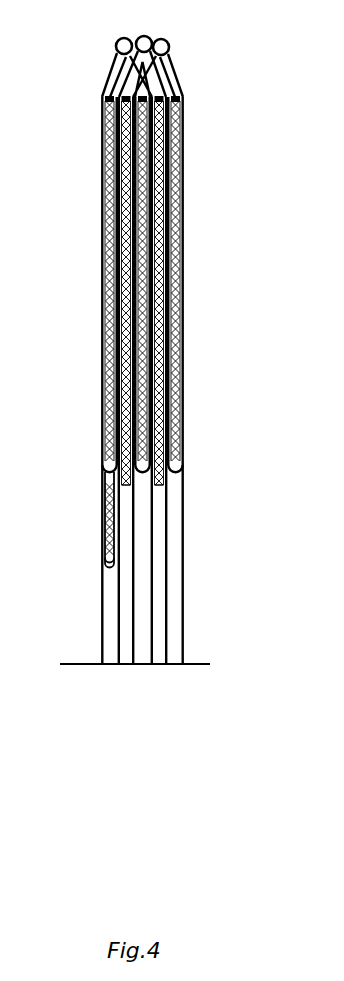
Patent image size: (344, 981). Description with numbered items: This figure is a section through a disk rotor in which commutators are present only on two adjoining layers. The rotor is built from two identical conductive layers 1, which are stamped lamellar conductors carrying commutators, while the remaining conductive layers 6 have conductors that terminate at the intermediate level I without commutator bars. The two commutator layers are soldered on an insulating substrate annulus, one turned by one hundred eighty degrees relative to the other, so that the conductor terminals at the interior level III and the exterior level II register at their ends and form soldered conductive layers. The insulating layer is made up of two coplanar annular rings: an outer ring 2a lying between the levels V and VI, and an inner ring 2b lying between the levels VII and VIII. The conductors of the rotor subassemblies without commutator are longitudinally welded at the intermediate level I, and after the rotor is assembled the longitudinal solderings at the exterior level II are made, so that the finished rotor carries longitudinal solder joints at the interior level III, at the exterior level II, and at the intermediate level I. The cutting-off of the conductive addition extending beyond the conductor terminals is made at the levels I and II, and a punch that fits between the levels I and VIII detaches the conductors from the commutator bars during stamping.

The conductive layer 1 is at (118, 196).
The outer ring 2a is at (107, 325).
The inner ring 2b is at (115, 517).
The conductive layer 6 is at (147, 225).
The intermediate level I is at (102, 473).
The exterior level II is at (118, 37).
The interior level III is at (103, 570).
The level V is at (236, 438).
The level VI is at (248, 93).
The level VII is at (107, 543).
The level VIII is at (102, 483).